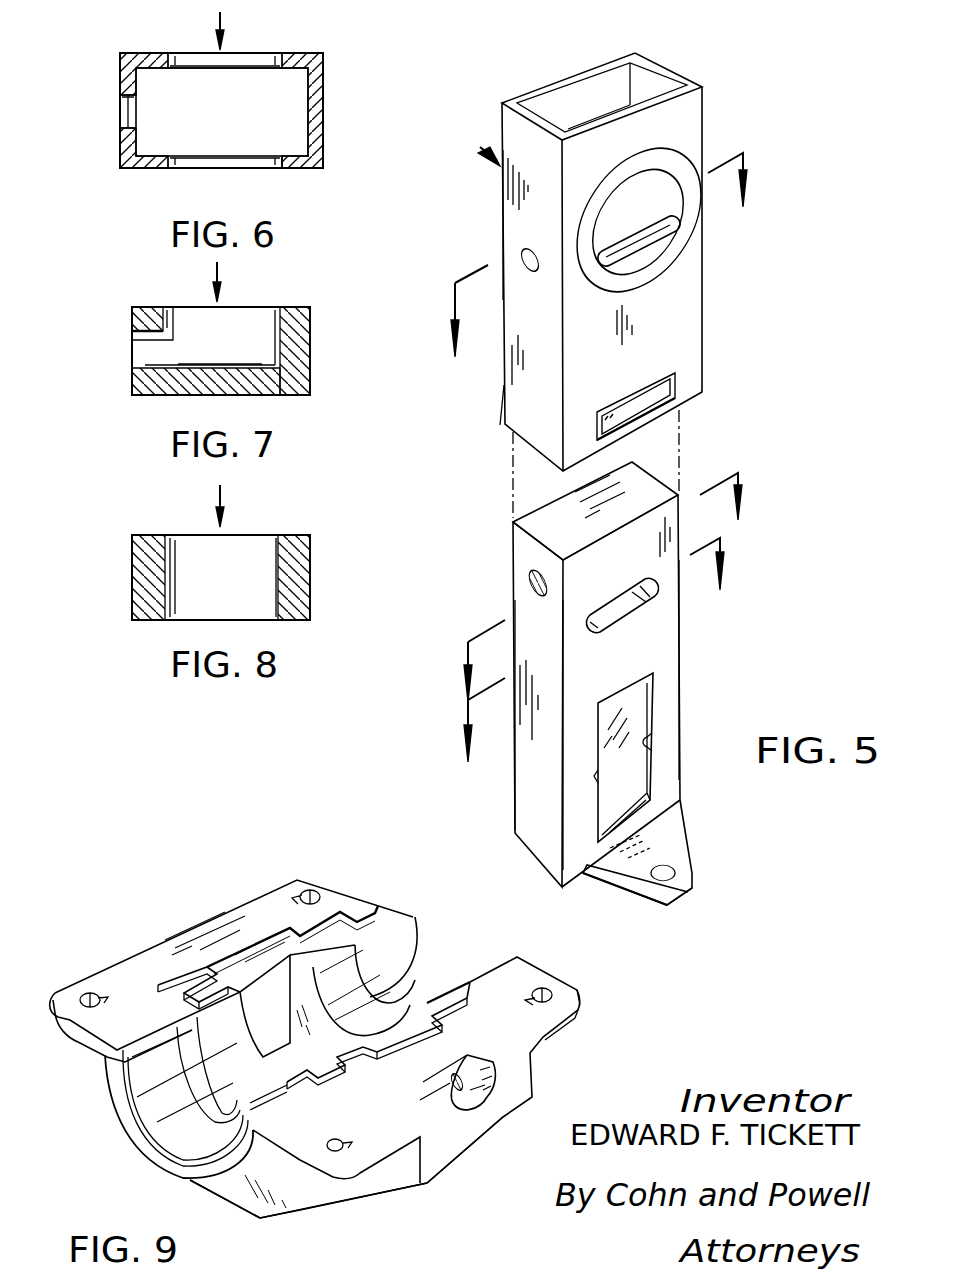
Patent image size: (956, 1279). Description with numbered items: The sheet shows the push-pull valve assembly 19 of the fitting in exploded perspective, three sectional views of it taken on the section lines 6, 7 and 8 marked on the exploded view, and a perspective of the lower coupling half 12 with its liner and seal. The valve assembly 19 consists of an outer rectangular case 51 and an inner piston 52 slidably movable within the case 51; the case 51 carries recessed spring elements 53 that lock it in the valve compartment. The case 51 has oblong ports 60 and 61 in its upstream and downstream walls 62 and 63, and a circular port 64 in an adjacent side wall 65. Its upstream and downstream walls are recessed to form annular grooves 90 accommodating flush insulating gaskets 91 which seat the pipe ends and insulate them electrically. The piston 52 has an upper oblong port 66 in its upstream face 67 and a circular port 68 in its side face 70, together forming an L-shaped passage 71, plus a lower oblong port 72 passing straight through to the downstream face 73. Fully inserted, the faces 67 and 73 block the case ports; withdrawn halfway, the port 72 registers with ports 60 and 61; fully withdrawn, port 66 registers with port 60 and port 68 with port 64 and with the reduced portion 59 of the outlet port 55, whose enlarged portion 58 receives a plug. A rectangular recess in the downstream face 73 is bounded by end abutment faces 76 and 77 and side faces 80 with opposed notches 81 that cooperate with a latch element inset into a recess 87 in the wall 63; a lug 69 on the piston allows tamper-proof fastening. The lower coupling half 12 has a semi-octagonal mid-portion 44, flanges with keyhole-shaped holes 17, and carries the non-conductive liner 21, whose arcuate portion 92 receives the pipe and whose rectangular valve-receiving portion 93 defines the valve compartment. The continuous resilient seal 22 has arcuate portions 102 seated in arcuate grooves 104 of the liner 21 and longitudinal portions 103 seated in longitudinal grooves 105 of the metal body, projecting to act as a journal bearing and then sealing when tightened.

In FIG. 5, the section line 6— 6 is at (600, 252).
In FIG. 5, the section line 7— 7 is at (605, 587).
In FIG. 5, the section line 8— 8 is at (598, 652).
In FIG. 9, the lower coupling half 12 is at (432, 1185).
In FIG. 9, the keyhole-shaped holes 17 is at (88, 995).
In FIG. 5, the valve assembly 19 is at (505, 530).
In FIG. 9, the lower liner 21 is at (106, 1078).
In FIG. 9, the continuous resilient seals 22 is at (485, 965).
In FIG. 9, the semi-octagonal mid-portion 44 is at (352, 1207).
In FIG. 6, the outer rectangular case 51 is at (118, 55).
In FIG. 5, the outer rectangular case 51 is at (500, 212).
In FIG. 7, the inner piston 52 is at (131, 316).
In FIG. 8, the inner piston 52 is at (131, 540).
In FIG. 5, the inner piston 52 is at (535, 505).
In FIG. 5, the recessed spring elements 53 is at (500, 382).
In FIG. 9, the outlet port 55 is at (490, 1082).
In FIG. 9, the enlarged portion 58 is at (465, 1110).
In FIG. 9, the reduced portion 59 is at (472, 1093).
In FIG. 6, the oblong port 60 is at (176, 60).
In FIG. 6, the oblong port 61 is at (268, 168).
In FIG. 5, the oblong port 61 is at (634, 236).
In FIG. 6, the upstream wall 62 is at (285, 55).
In FIG. 5, the upstream wall 62 is at (565, 76).
In FIG. 6, the downstream wall 63 is at (152, 168).
In FIG. 5, the downstream wall 63 is at (664, 82).
In FIG. 6, the circular port 64 is at (120, 110).
In FIG. 5, the circular port 64 is at (520, 262).
In FIG. 6, the side wall 65 is at (120, 73).
In FIG. 5, the side wall 65 is at (520, 115).
In FIG. 7, the upper oblong port 66 is at (198, 318).
In FIG. 7, the upstream face 67 is at (286, 308).
In FIG. 8, the upstream face 67 is at (286, 536).
In FIG. 5, the upstream face 67 is at (512, 812).
In FIG. 7, the circular port 68 is at (140, 344).
In FIG. 5, the circular port 68 is at (528, 583).
In FIG. 5, the lug 69 is at (684, 872).
In FIG. 7, the side face 70 is at (132, 376).
In FIG. 5, the side face 70 is at (527, 774).
In FIG. 7, the L-shaped passage 71 is at (232, 361).
In FIG. 8, the lower oblong port 72 is at (232, 594).
In FIG. 5, the lower oblong port 72 is at (615, 604).
In FIG. 7, the downstream face 73 is at (208, 396).
In FIG. 8, the downstream face 73 is at (298, 620).
In FIG. 5, the downstream face 73 is at (680, 637).
In FIG. 5, the end abutment face 76 is at (616, 818).
In FIG. 5, the end abutment face 77 is at (618, 698).
In FIG. 5, the side faces 80 is at (652, 698).
In FIG. 5, the opposed notches 81 is at (660, 743).
In FIG. 5, the recess 87 is at (630, 404).
In FIG. 5, the annular grooves 90 is at (658, 280).
In FIG. 5, the insulating gaskets 91 is at (612, 280).
In FIG. 9, the arcuate portion 92 is at (108, 1104).
In FIG. 9, the rectangular valve-receiving portion 93 is at (275, 1013).
In FIG. 9, the arcuate portions 102 is at (205, 1080).
In FIG. 9, the longitudinal portions 103 is at (392, 1085).
In FIG. 9, the arcuate grooves 104 is at (395, 950).
In FIG. 9, the longitudinal grooves 105 is at (262, 952).